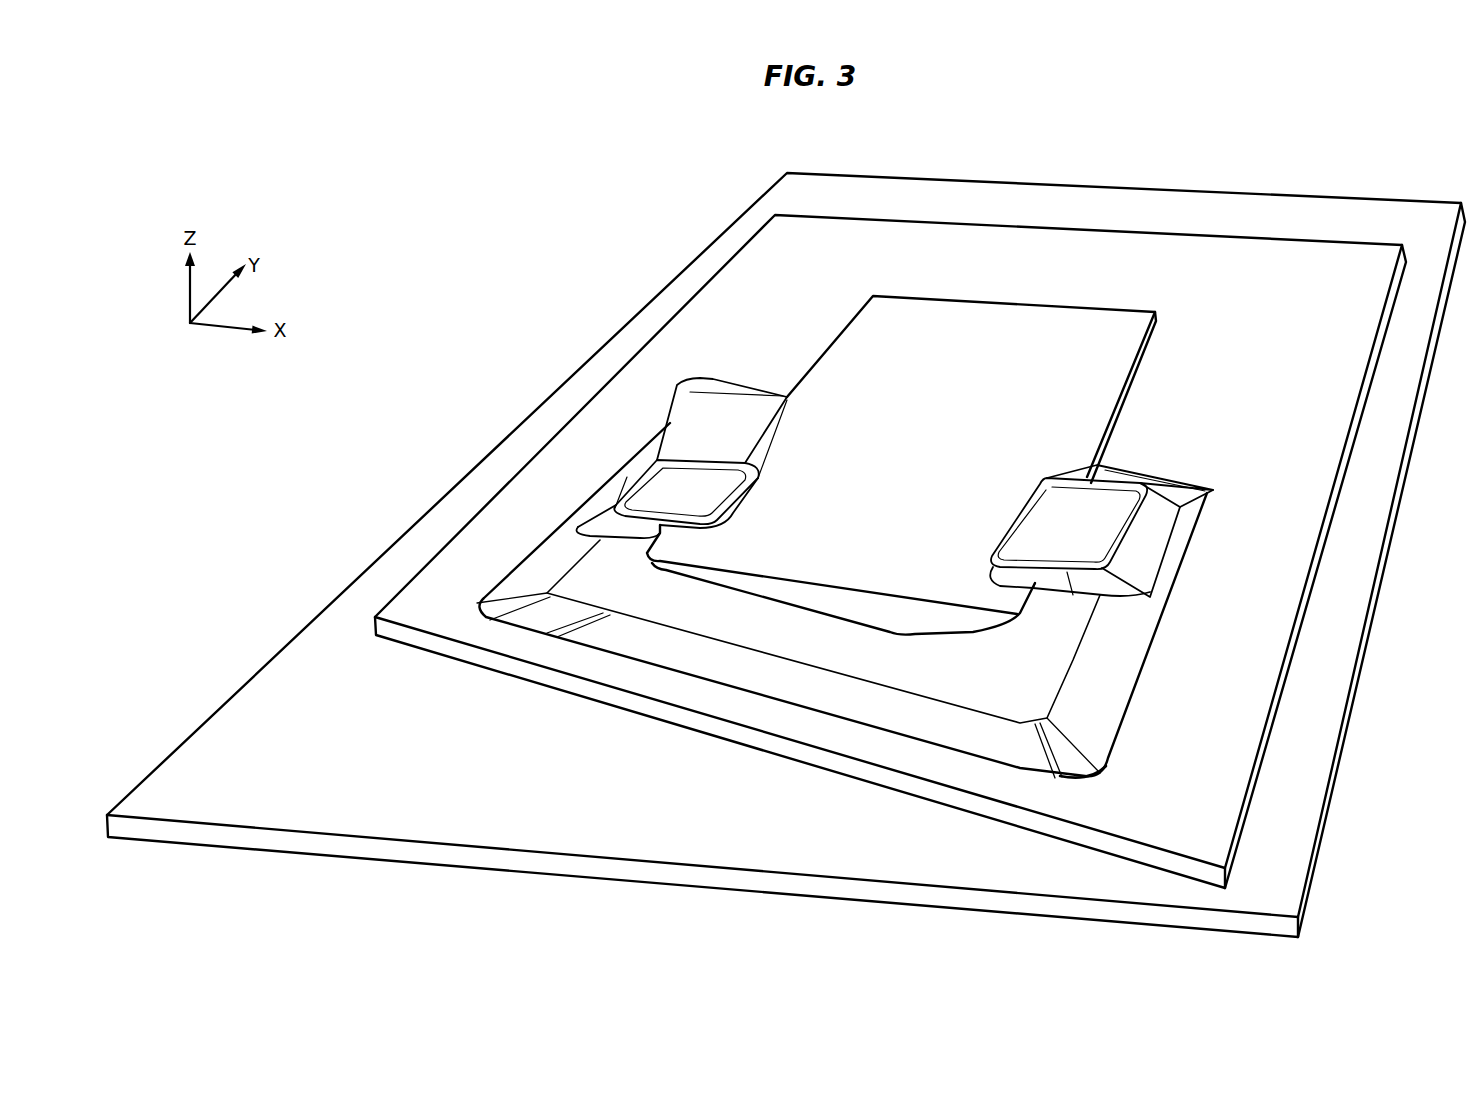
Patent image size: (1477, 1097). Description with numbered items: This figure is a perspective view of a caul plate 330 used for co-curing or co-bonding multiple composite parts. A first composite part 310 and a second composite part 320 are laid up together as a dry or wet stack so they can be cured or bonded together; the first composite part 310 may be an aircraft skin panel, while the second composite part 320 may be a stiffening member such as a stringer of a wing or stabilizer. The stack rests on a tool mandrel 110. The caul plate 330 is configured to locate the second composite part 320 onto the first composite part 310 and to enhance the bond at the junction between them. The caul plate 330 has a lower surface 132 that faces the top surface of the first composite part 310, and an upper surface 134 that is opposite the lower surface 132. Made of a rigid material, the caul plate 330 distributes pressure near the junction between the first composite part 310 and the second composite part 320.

The tool mandrel 110 is at (786, 555).
The first composite part 310 is at (856, 551).
The second composite part 320 is at (878, 389).
The caul plate 330 is at (846, 559).
The lower surface 132 is at (1092, 781).
The upper surface 134 is at (1108, 678).